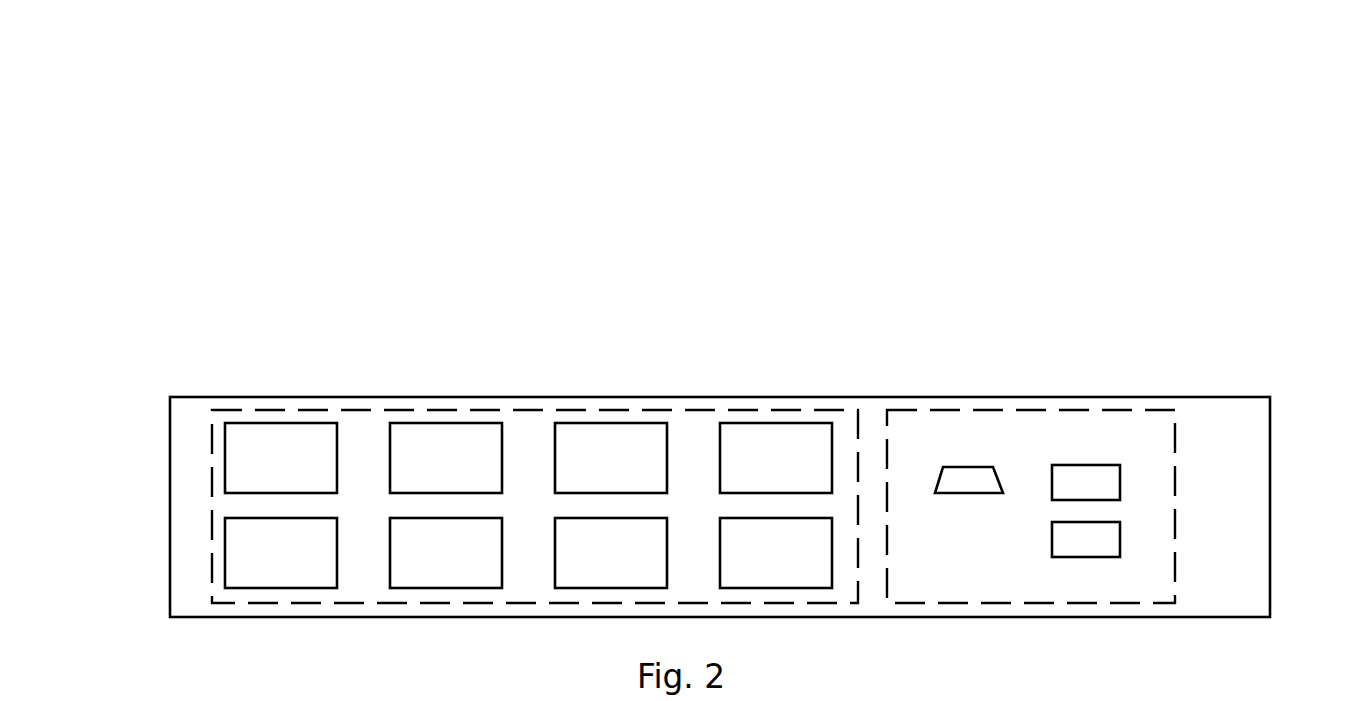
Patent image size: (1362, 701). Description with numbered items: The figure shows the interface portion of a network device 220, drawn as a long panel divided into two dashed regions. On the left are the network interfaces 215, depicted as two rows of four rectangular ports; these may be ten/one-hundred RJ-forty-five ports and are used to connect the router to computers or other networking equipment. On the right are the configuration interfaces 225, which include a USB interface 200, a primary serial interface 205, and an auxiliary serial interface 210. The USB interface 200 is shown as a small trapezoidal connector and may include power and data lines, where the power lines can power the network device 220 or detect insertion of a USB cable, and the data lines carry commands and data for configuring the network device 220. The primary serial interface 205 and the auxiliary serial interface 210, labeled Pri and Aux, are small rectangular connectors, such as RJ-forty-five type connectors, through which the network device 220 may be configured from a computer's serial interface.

The network device 220 is at (127, 118).
The network interfaces 215 is at (209, 436).
The configuration interfaces 225 is at (930, 602).
The USB interface 200 is at (935, 483).
The primary serial interface 205 is at (1122, 482).
The auxiliary serial interface 210 is at (1120, 540).